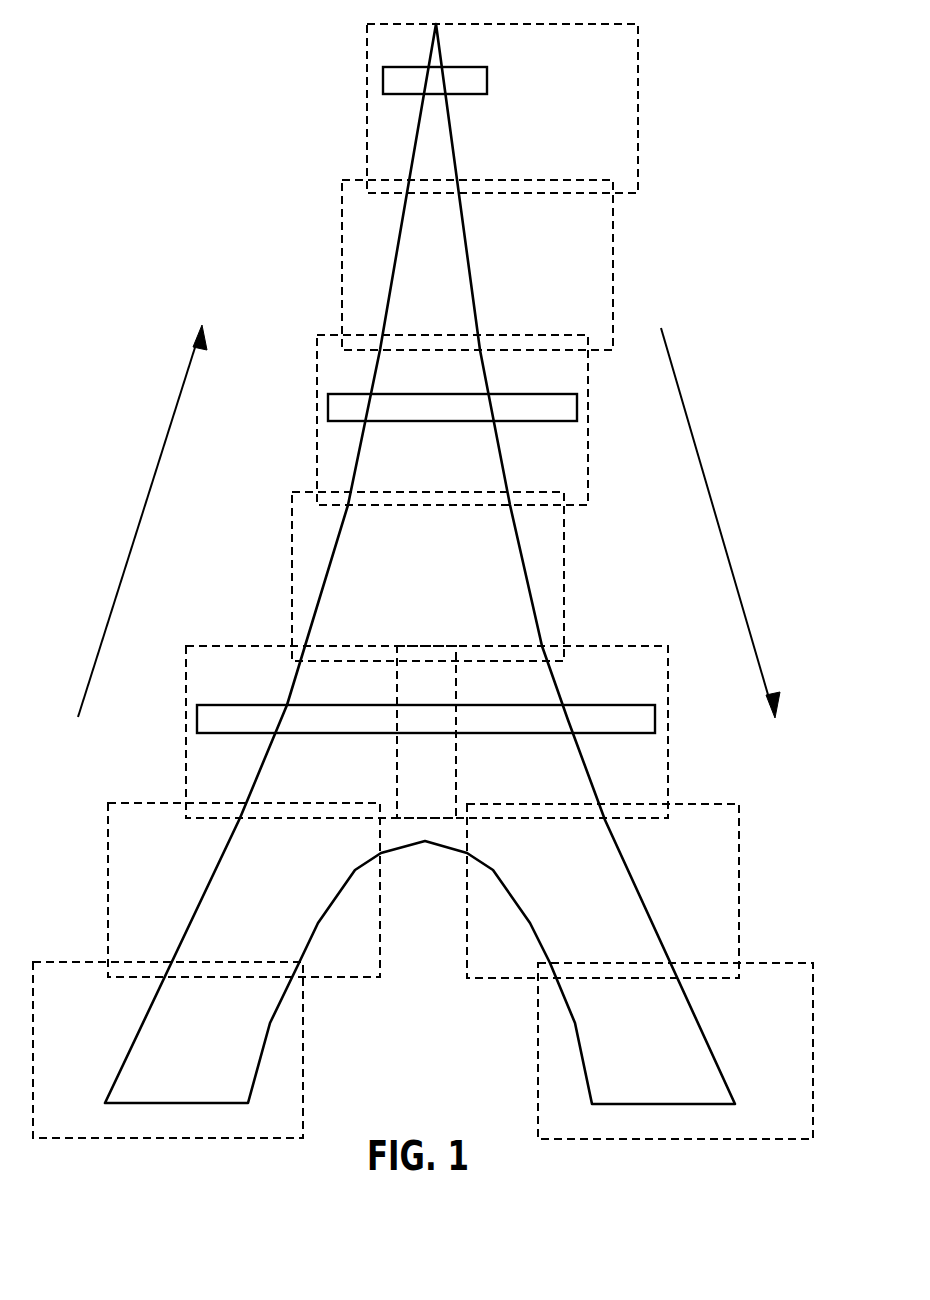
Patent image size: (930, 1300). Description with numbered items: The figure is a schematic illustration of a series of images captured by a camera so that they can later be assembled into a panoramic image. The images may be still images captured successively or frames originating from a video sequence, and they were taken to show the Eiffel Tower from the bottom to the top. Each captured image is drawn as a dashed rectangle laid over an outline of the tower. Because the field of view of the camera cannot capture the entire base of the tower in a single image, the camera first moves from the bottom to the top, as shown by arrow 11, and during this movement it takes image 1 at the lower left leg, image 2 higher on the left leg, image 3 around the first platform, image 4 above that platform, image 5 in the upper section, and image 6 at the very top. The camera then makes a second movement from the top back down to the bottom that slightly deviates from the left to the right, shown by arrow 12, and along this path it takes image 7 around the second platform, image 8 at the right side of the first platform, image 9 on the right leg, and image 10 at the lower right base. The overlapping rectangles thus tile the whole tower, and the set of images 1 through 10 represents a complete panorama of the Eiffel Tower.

The image 1 is at (73, 962).
The image 2 is at (148, 803).
The image 3 is at (226, 646).
The image 4 is at (332, 492).
The image 5 is at (382, 180).
The image 6 is at (409, 24).
The image 7 is at (357, 335).
The image 8 is at (626, 646).
The image 9 is at (699, 804).
The image 10 is at (813, 1005).
The arrow 11 is at (133, 532).
The arrow 12 is at (722, 534).